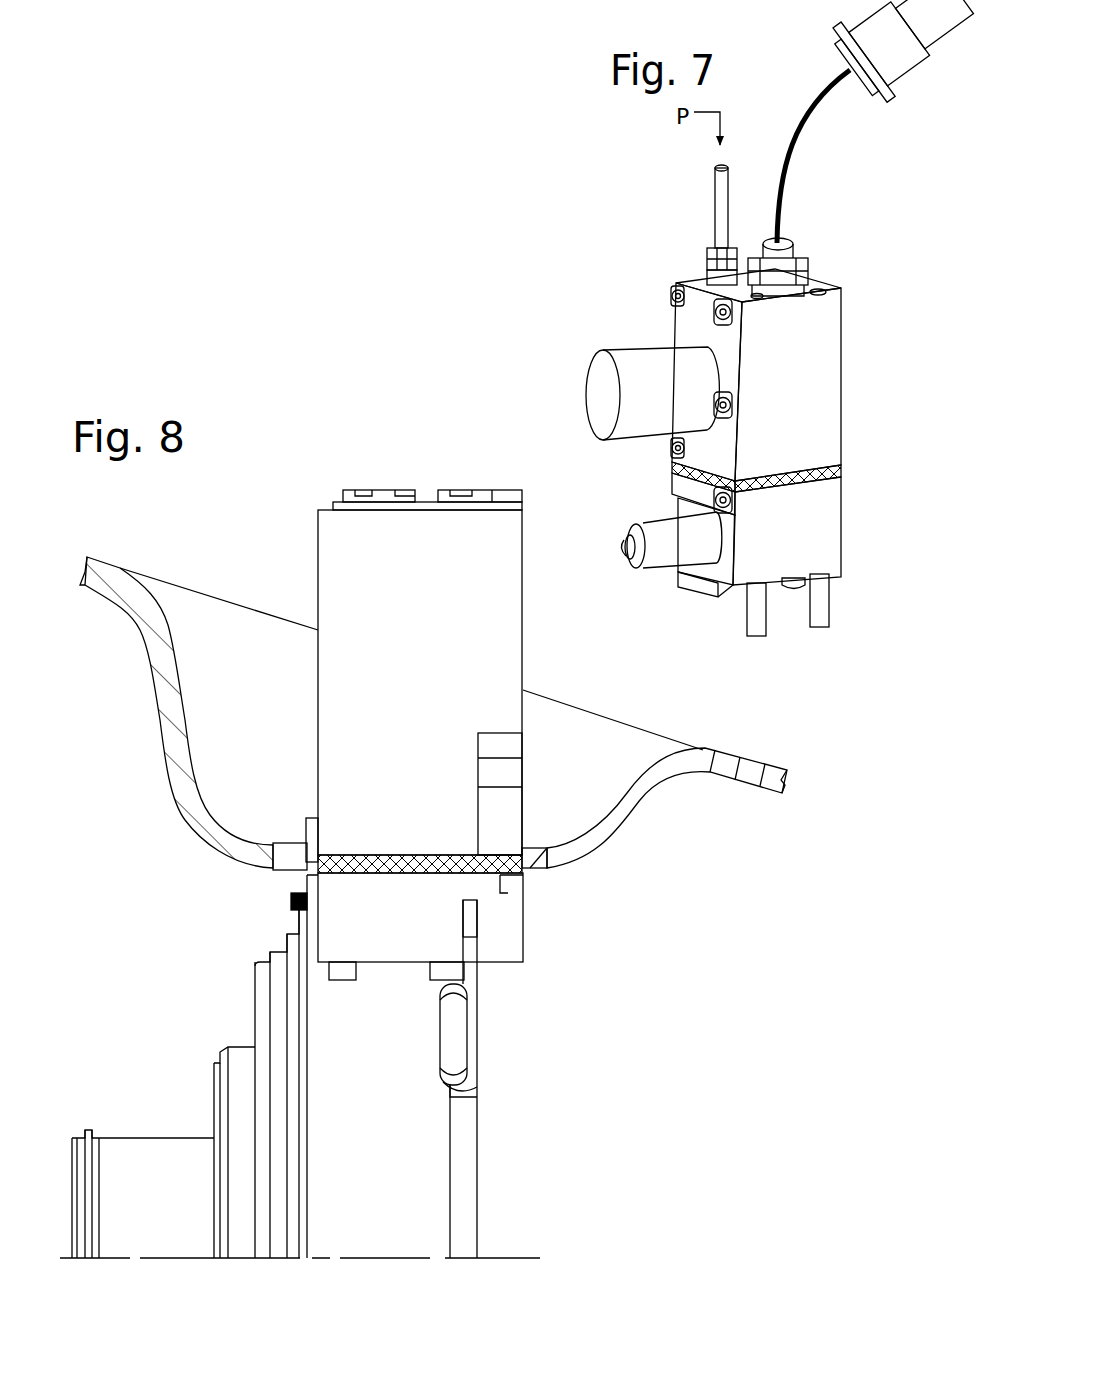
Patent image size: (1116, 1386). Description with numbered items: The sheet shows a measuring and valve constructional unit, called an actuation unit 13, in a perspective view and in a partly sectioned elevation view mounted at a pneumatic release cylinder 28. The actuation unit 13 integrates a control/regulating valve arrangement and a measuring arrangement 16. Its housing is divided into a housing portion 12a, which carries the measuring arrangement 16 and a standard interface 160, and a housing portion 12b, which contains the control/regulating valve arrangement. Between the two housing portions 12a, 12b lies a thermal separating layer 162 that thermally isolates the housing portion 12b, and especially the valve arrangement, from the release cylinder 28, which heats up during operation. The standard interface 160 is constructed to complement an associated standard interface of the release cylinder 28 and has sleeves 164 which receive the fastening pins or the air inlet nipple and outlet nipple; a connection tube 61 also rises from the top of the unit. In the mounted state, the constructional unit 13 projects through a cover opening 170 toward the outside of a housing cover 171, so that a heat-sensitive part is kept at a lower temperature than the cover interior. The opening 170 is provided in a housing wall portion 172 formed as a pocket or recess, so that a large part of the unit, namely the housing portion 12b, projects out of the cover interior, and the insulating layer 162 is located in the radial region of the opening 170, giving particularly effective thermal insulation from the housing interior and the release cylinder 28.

In FIG. 7, the housing portion 12a is at (820, 530).
In FIG. 8, the housing portion 12a is at (503, 937).
In FIG. 7, the housing portion 12b is at (828, 312).
In FIG. 8, the housing portion 12b is at (503, 597).
In FIG. 7, the actuation unit 13 is at (756, 450).
In FIG. 8, the actuation unit 13 is at (475, 732).
In FIG. 7, the measuring arrangement 16 is at (680, 555).
In FIG. 8, the measuring arrangement 16 is at (278, 900).
In FIG. 8, the release cylinder 28 is at (422, 1108).
In FIG. 7, the pressure connection tube 61 is at (722, 185).
In FIG. 7, the standard interface 160 is at (823, 607).
In FIG. 7, the thermal separating layer 162 is at (842, 465).
In FIG. 8, the thermal separating layer 162 is at (525, 872).
In FIG. 7, the sleeves 164 is at (757, 612).
In FIG. 8, the cover opening 170 is at (535, 848).
In FIG. 8, the housing cover 171 is at (100, 584).
In FIG. 8, the housing wall portion 172 is at (181, 713).